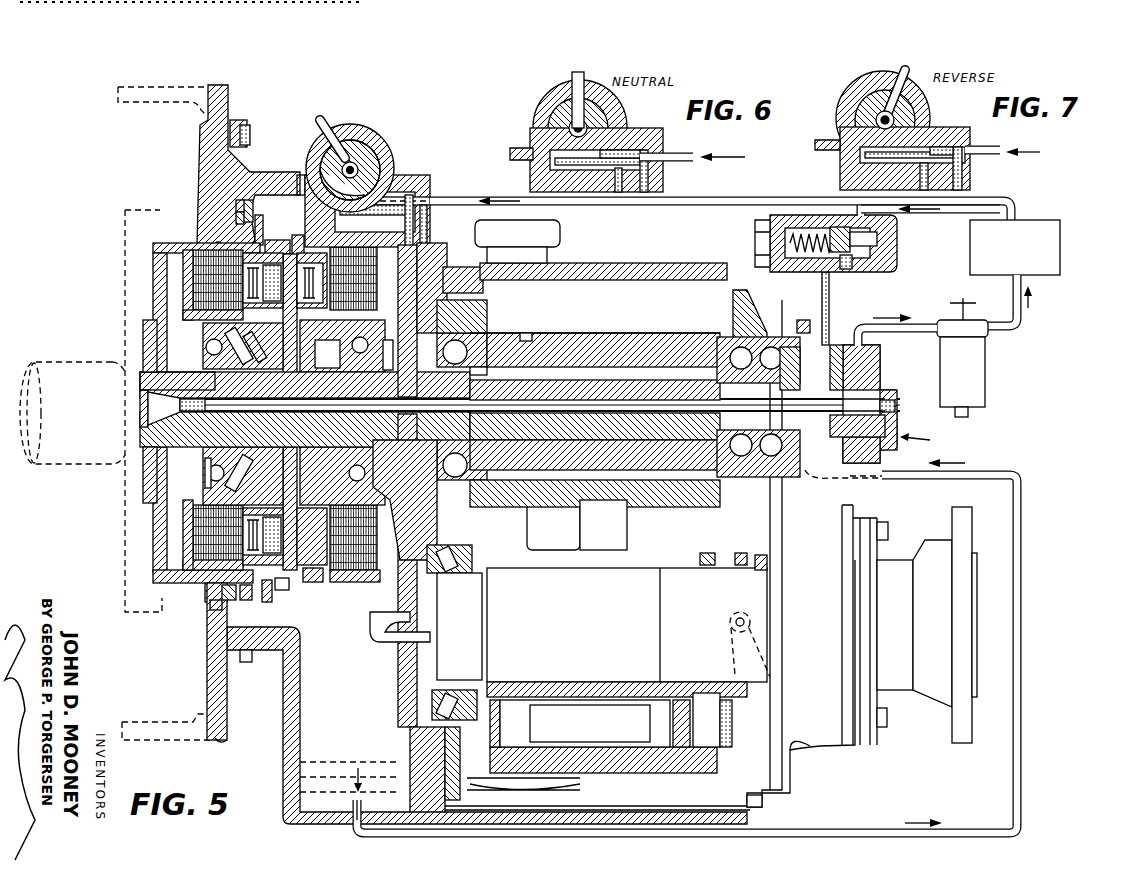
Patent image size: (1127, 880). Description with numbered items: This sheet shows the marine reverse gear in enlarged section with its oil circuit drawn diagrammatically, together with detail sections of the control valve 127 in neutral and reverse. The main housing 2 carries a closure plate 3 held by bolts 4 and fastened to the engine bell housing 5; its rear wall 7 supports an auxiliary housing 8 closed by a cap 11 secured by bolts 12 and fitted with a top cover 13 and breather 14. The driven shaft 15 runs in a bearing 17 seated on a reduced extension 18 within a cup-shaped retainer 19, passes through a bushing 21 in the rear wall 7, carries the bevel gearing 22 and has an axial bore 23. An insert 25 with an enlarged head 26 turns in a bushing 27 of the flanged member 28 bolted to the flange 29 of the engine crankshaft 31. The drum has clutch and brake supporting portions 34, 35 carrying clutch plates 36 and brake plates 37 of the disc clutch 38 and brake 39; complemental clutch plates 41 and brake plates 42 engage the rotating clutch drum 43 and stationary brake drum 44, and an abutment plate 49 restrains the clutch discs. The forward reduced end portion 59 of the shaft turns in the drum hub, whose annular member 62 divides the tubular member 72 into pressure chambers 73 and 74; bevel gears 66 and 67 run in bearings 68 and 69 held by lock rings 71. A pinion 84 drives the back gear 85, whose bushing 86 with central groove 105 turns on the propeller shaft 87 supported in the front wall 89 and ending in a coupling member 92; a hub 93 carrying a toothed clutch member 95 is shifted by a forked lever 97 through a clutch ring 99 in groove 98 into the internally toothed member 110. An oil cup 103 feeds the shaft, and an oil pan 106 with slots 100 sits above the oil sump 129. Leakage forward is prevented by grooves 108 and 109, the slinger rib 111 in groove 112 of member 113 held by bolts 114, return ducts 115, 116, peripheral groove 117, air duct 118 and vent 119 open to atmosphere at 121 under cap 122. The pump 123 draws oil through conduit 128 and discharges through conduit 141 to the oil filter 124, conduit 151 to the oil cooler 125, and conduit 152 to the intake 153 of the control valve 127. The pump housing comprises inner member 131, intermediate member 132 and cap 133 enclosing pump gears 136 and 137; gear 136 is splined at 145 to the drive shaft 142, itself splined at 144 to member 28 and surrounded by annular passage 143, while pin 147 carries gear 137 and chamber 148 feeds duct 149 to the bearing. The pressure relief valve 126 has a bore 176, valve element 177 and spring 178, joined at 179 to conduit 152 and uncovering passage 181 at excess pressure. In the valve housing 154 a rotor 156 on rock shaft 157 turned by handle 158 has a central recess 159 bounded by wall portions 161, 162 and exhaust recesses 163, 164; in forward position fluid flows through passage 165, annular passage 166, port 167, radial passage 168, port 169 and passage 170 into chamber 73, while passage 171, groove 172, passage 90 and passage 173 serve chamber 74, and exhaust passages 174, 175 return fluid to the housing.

In FIG. 5, the main housing 2 is at (288, 818).
In FIG. 5, the closure plate 3 is at (222, 735).
In FIG. 5, the bolts 4 is at (245, 662).
In FIG. 5, the bell housing 5 is at (148, 104).
In FIG. 5, the rear wall 7 is at (408, 700).
In FIG. 5, the auxiliary housing 8 is at (525, 838).
In FIG. 5, the closure or cap 11 is at (752, 325).
In FIG. 5, the bolts 12 is at (761, 801).
In FIG. 5, the top cover 13 is at (605, 268).
In FIG. 5, the breather 14 is at (553, 238).
In FIG. 5, the driven shaft 15 is at (555, 350).
In FIG. 5, the bearing 17 is at (735, 350).
In FIG. 5, the reduced extension 18 is at (795, 350).
In FIG. 5, the cup-shaped retainer 19 is at (790, 323).
In FIG. 5, the bushing 21 is at (382, 351).
In FIG. 5, the bevel gearing 22 is at (190, 500).
In FIG. 5, the axial bore 23 is at (595, 495).
In FIG. 5, the elongated insert 25 is at (205, 430).
In FIG. 5, the enlarged head 26 is at (140, 400).
In FIG. 5, the bushing 27 is at (143, 386).
In FIG. 5, the flanged member 28 is at (140, 500).
In FIG. 5, the flange 29 is at (124, 612).
In FIG. 5, the engine crankshaft 31 is at (42, 470).
In FIG. 5, the clutch supporting portion 34 is at (198, 318).
In FIG. 5, the brake supporting portion 35 is at (440, 565).
In FIG. 5, the clutch plates 36 is at (195, 565).
In FIG. 5, the brake plates 37 is at (342, 584).
In FIG. 5, the disc clutch 38 is at (215, 265).
In FIG. 5, the brake 39 is at (385, 290).
In FIG. 5, the complemental clutch plates 41 is at (192, 540).
In FIG. 5, the complemental brake plates 42 is at (352, 572).
In FIG. 5, the clutch drum 43 is at (170, 238).
In FIG. 5, the brake drum 44 is at (405, 210).
In FIG. 5, the annular abutment plate 49 is at (210, 282).
In FIG. 5, the forward reduced end portion 59 is at (327, 378).
In FIG. 5, the annular member 62 is at (295, 592).
In FIG. 5, the bevel gear 66 is at (205, 352).
In FIG. 5, the bevel gear wheel 67 is at (315, 584).
In FIG. 5, the anti-friction bearing 68 is at (208, 470).
In FIG. 5, the anti-friction bearing 69 is at (352, 345).
In FIG. 5, the lock rings 71 is at (206, 488).
In FIG. 5, the annular tubular member 72 is at (298, 236).
In FIG. 5, the pressure chamber 73 is at (270, 250).
In FIG. 5, the pressure chamber 74 is at (315, 265).
In FIG. 5, the pinion 84 is at (585, 342).
In FIG. 5, the back gear 85 is at (560, 757).
In FIG. 5, the bushing 86 is at (530, 682).
In FIG. 5, the propeller shaft 87 is at (590, 625).
In FIG. 5, the front wall 89 is at (440, 740).
In FIG. 5, the longitudinally extending passage 90 is at (352, 468).
In FIG. 5, the coupling member 92 is at (966, 728).
In FIG. 5, the hub 93 is at (708, 552).
In FIG. 5, the annular toothed clutch member 95 is at (673, 715).
In FIG. 5, the forked lever 97 is at (760, 640).
In FIG. 5, the peripheral groove 98 is at (767, 562).
In FIG. 5, the clutch ring 99 is at (741, 552).
In FIG. 5, the oil passages 100 is at (585, 790).
In FIG. 5, the oil-receiving cup 103 is at (385, 644).
In FIG. 5, the annular central groove 105 is at (603, 525).
In FIG. 5, the oil pan 106 is at (580, 815).
In FIG. 5, the annular grooves 108 is at (175, 576).
In FIG. 5, the inwardly facing grooves 109 is at (212, 598).
In FIG. 5, the internally toothed member 110 is at (690, 748).
In FIG. 5, the oil slinger rib 111 is at (262, 246).
In FIG. 5, the inwardly facing groove 112 is at (248, 212).
In FIG. 5, the member 113 is at (236, 220).
In FIG. 5, the bolts 114 is at (238, 205).
In FIG. 5, the oil return ducts 115 is at (218, 605).
In FIG. 5, the oil return ducts 116 is at (247, 600).
In FIG. 5, the annular peripheral groove 117 is at (266, 602).
In FIG. 5, the air duct 118 is at (212, 240).
In FIG. 5, the air passage 119 is at (215, 162).
In FIG. 5, the atmospheric opening 121 is at (238, 120).
In FIG. 5, the cap 122 is at (250, 130).
In FIG. 5, the oil pump 123 is at (888, 376).
In FIG. 5, the oil filter 124 is at (992, 385).
In FIG. 5, the oil cooler 125 is at (1065, 248).
In FIG. 5, the pressure relief valve 126 is at (752, 243).
In FIG. 5, the control valve 127 is at (420, 155).
In FIG. 5, the conduit 128 is at (826, 838).
In FIG. 5, the oil sump 129 is at (300, 785).
In FIG. 5, the inner member 131 is at (838, 345).
In FIG. 5, the intermediate member 132 is at (862, 360).
In FIG. 5, the outer member or cap 133 is at (890, 445).
In FIG. 5, the pump gear 136 is at (880, 395).
In FIG. 5, the pump gear 137 is at (886, 424).
In FIG. 5, the conduit 141 is at (919, 323).
In FIG. 5, the pump drive shaft 142 is at (621, 398).
In FIG. 5, the annular oil circulating passage 143 is at (658, 388).
In FIG. 5, the spline 144 is at (164, 408).
In FIG. 5, the spline 145 is at (896, 402).
In FIG. 5, the pin 147 is at (886, 452).
In FIG. 5, the annular fluid chamber 148 is at (832, 466).
In FIG. 5, the duct 149 is at (598, 470).
In FIG. 5, the conduit 151 is at (1023, 326).
In FIG. 5, the conduit 152 is at (518, 196).
In FIG. 6, the conduit 152 is at (690, 157).
In FIG. 7, the conduit 152 is at (985, 150).
In FIG. 5, the intake 153 is at (428, 202).
In FIG. 5, the valve housing 154 is at (358, 130).
In FIG. 5, the rotor 156 is at (375, 130).
In FIG. 6, the rotor 156 is at (560, 130).
In FIG. 7, the rotor 156 is at (918, 102).
In FIG. 5, the rock shaft 157 is at (360, 170).
In FIG. 5, the operating handle 158 is at (330, 122).
In FIG. 6, the operating handle 158 is at (572, 75).
In FIG. 7, the operating handle 158 is at (902, 70).
In FIG. 6, the central recess 159 is at (572, 192).
In FIG. 7, the central recess 159 is at (866, 140).
In FIG. 6, the radial wall portion 161 is at (548, 182).
In FIG. 7, the radial wall portion 161 is at (860, 130).
In FIG. 6, the radial wall portion 162 is at (620, 135).
In FIG. 5, the peripheral recess 163 is at (385, 150).
In FIG. 6, the peripheral recess 163 is at (616, 108).
In FIG. 7, the peripheral recess 163 is at (922, 118).
In FIG. 5, the peripheral recess 164 is at (325, 148).
In FIG. 6, the peripheral recess 164 is at (556, 128).
In FIG. 7, the peripheral recess 164 is at (862, 117).
In FIG. 5, the fluid passage 165 is at (415, 220).
In FIG. 6, the fluid passage 165 is at (660, 172).
In FIG. 7, the fluid passage 165 is at (962, 165).
In FIG. 5, the annular fluid passage 166 is at (470, 333).
In FIG. 5, the port 167 is at (488, 372).
In FIG. 5, the radial fluid passage 168 is at (200, 378).
In FIG. 5, the port 169 is at (259, 347).
In FIG. 5, the passage 170 is at (249, 343).
In FIG. 5, the fluid passage 171 is at (447, 310).
In FIG. 6, the fluid passage 171 is at (660, 185).
In FIG. 7, the fluid passage 171 is at (962, 178).
In FIG. 5, the annular groove 172 is at (440, 510).
In FIG. 5, the fluid passage 173 is at (283, 470).
In FIG. 5, the exhaust passage 174 is at (428, 235).
In FIG. 6, the exhaust passage 174 is at (618, 192).
In FIG. 7, the exhaust passage 174 is at (930, 133).
In FIG. 5, the exhaust passage 175 is at (300, 175).
In FIG. 5, the bore 176 is at (848, 262).
In FIG. 5, the valve element 177 is at (840, 227).
In FIG. 5, the spring 178 is at (805, 228).
In FIG. 5, the connection 179 is at (870, 211).
In FIG. 5, the passage 181 is at (831, 305).